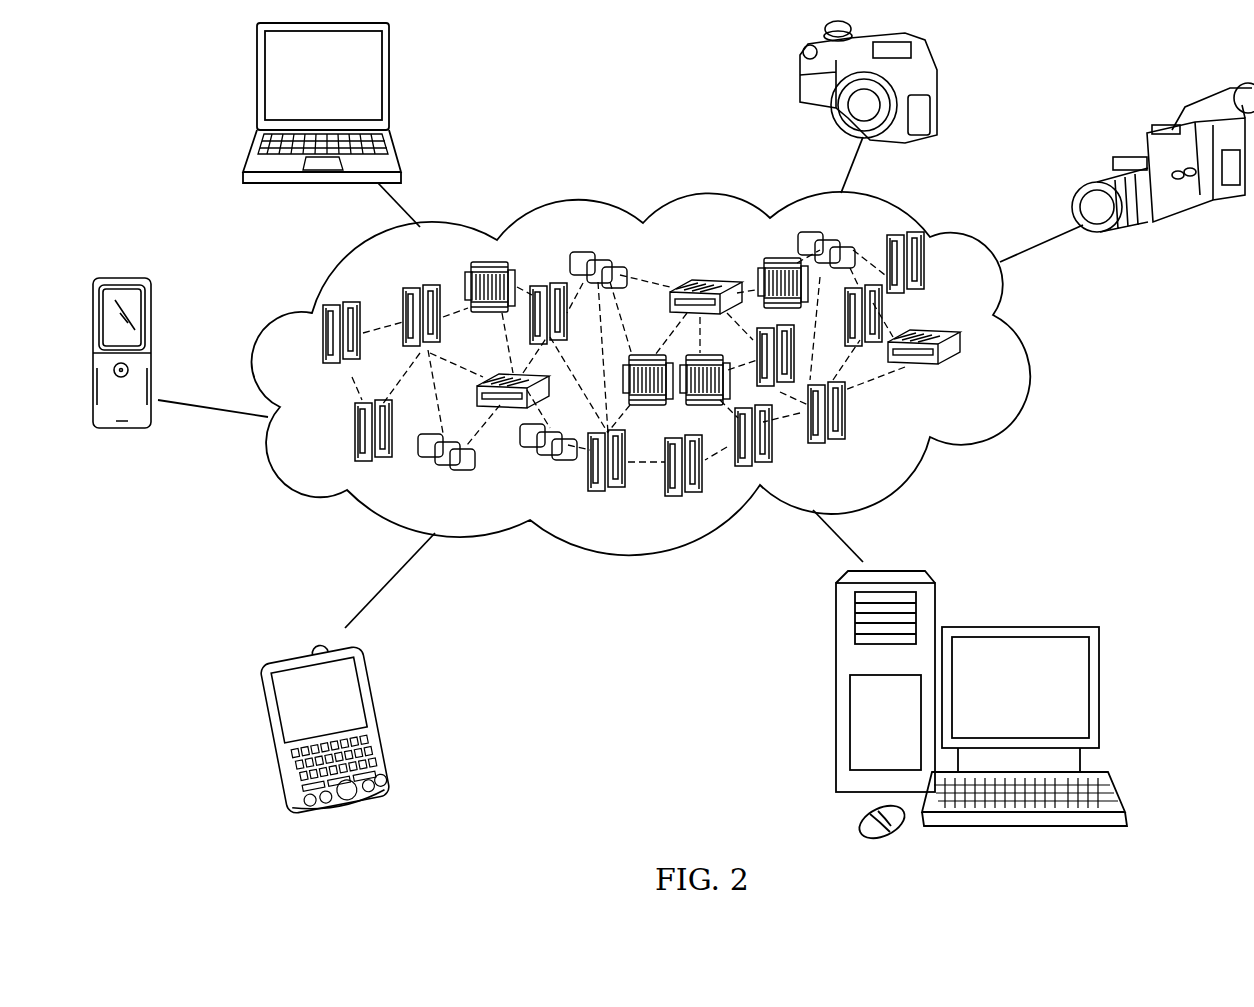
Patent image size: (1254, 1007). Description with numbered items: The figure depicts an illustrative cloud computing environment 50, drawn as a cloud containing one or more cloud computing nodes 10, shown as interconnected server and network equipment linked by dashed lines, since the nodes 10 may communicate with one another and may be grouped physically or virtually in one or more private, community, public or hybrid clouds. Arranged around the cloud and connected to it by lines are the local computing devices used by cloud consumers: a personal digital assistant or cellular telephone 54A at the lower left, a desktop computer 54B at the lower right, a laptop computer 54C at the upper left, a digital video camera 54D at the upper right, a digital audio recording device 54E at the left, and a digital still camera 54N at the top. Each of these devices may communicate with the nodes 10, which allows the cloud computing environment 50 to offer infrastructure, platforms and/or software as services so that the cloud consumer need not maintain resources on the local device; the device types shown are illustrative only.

The cloud computing nodes 10 is at (965, 378).
The cloud computing environment 50 is at (1017, 348).
The personal digital assistant (PDA) or cellular telephone 54A is at (378, 719).
The desktop computer 54B is at (1018, 626).
The laptop computer 54C is at (390, 83).
The digital video camera 54D is at (1180, 222).
The digital audio recording device 54E is at (112, 430).
The digital still camera 54N is at (800, 92).